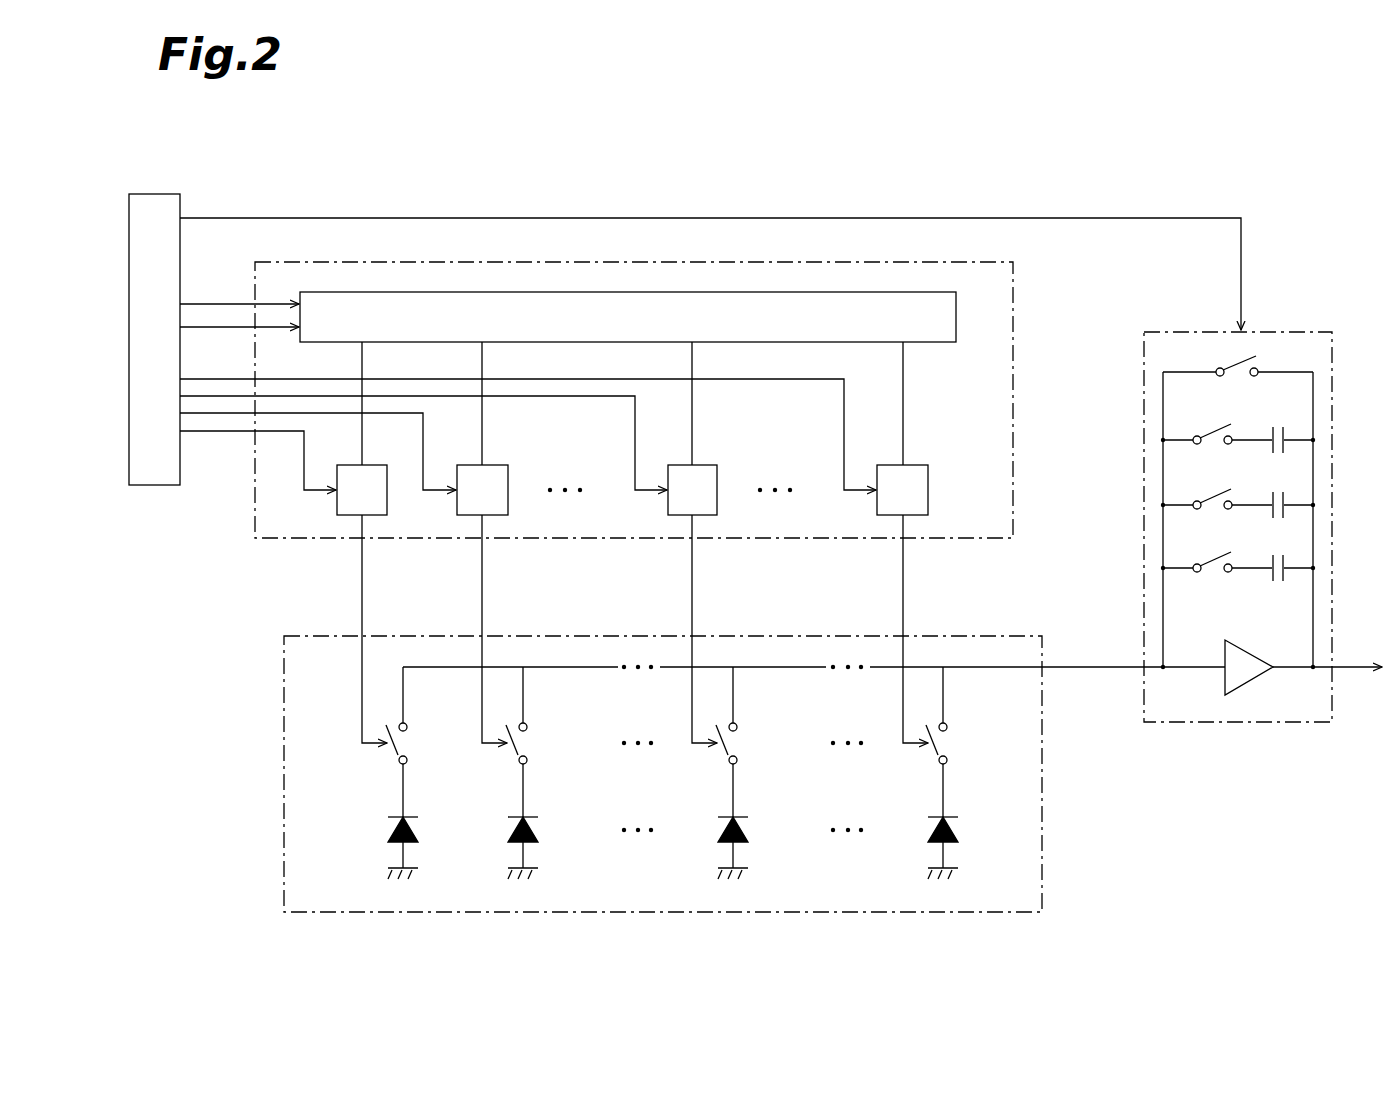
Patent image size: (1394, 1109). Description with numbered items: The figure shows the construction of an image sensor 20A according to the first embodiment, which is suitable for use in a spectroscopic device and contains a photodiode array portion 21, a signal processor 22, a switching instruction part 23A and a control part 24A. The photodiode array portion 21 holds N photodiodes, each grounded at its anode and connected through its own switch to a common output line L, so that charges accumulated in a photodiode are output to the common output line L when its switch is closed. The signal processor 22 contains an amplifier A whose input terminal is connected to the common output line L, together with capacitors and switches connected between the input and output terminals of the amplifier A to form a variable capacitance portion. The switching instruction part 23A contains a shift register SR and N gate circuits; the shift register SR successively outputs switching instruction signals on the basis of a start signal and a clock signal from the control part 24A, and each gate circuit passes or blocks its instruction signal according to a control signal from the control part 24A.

The image sensor 20A is at (1296, 194).
The photodiode array portion 21 is at (754, 758).
The signal processor 22 is at (1263, 565).
The switching instruction part 23A is at (682, 400).
The control part 24A is at (152, 485).
The shift register SR is at (628, 317).
The common output line L is at (1093, 664).
The amplifier A is at (1249, 673).